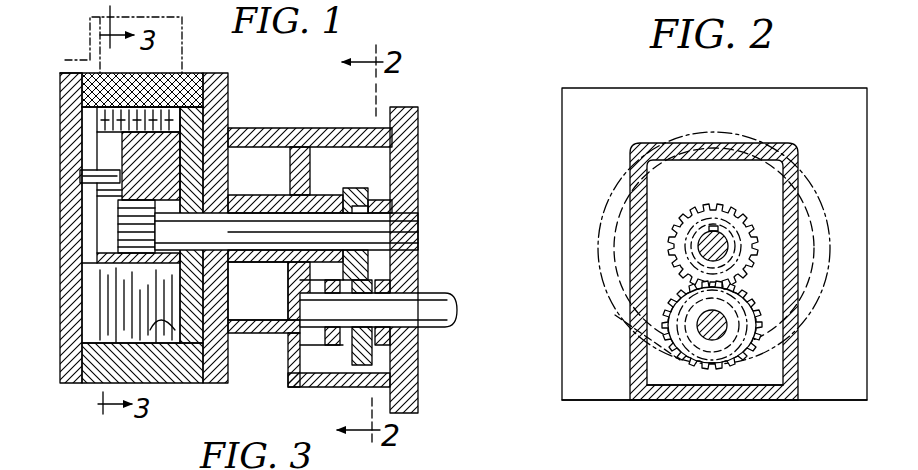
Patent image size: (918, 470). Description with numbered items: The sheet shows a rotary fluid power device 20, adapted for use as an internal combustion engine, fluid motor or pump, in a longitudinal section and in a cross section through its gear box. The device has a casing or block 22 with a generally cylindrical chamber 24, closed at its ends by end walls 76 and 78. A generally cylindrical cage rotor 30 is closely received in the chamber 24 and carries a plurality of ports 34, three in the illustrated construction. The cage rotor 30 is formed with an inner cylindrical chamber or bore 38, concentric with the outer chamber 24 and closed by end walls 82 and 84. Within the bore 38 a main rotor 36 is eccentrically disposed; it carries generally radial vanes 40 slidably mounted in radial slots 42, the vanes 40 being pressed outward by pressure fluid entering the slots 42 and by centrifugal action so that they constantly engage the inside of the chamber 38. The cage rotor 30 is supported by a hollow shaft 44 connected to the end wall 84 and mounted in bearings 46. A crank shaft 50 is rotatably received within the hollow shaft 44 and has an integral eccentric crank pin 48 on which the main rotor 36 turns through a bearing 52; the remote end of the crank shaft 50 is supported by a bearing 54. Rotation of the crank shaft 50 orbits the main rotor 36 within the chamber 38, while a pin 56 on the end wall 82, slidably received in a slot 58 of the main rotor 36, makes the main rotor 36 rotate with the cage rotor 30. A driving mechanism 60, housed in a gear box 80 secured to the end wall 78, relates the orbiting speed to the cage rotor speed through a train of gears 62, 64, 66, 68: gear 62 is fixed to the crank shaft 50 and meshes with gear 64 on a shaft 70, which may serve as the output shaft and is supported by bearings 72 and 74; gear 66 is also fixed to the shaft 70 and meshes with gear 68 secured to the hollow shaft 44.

In FIG. 1, the rotary fluid power device 20 is at (430, 67).
In FIG. 2, the rotary fluid power device 20 is at (838, 92).
In FIG. 1, the casing 22 is at (82, 385).
In FIG. 2, the casing 22 is at (562, 122).
In FIG. 2, the cylindrical chamber 24 is at (742, 125).
In FIG. 1, the cage rotor 30 is at (100, 334).
In FIG. 2, the cage rotor 30 is at (625, 201).
In FIG. 1, the ports 34 is at (147, 110).
In FIG. 1, the main rotor 36 is at (105, 238).
In FIG. 1, the chamber 38 is at (165, 387).
In FIG. 2, the chamber 38 is at (620, 242).
In FIG. 1, the vanes 40 is at (100, 306).
In FIG. 1, the radial slots 42 is at (105, 260).
In FIG. 1, the hollow shaft 44 is at (266, 194).
In FIG. 1, the bearings 46 is at (280, 274).
In FIG. 1, the crank pin 48 is at (110, 212).
In FIG. 1, the crank shaft 50 is at (286, 231).
In FIG. 2, the crank shaft 50 is at (722, 240).
In FIG. 1, the bearing 52 is at (97, 193).
In FIG. 1, the bearing 54 is at (419, 203).
In FIG. 1, the pin 56 is at (110, 158).
In FIG. 1, the slot 58 is at (113, 150).
In FIG. 1, the driving mechanism 60 is at (420, 152).
In FIG. 1, the gear 62 is at (368, 207).
In FIG. 2, the gear 62 is at (796, 250).
In FIG. 1, the gear 64 is at (373, 350).
In FIG. 2, the gear 64 is at (735, 372).
In FIG. 1, the gear 66 is at (333, 346).
In FIG. 2, the gear 66 is at (735, 362).
In FIG. 1, the gear 68 is at (339, 188).
In FIG. 2, the gear 68 is at (672, 250).
In FIG. 1, the shaft 70 is at (430, 300).
In FIG. 2, the shaft 70 is at (722, 322).
In FIG. 1, the bearing 72 is at (420, 340).
In FIG. 1, the bearing 74 is at (292, 350).
In FIG. 1, the end wall 76 is at (60, 81).
In FIG. 1, the end wall 78 is at (215, 95).
In FIG. 2, the end wall 78 is at (600, 115).
In FIG. 1, the gear box 80 is at (263, 128).
In FIG. 2, the gear box 80 is at (797, 147).
In FIG. 1, the end wall 82 is at (80, 176).
In FIG. 1, the end wall 84 is at (228, 114).